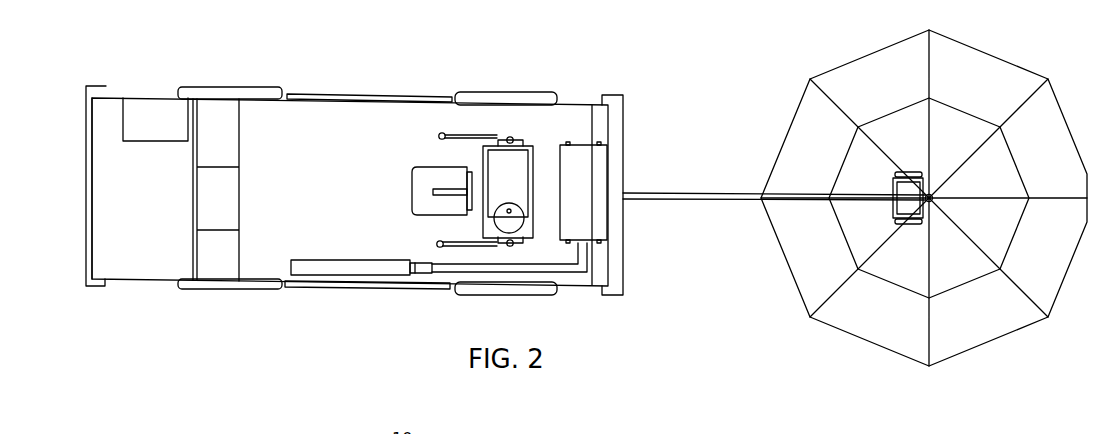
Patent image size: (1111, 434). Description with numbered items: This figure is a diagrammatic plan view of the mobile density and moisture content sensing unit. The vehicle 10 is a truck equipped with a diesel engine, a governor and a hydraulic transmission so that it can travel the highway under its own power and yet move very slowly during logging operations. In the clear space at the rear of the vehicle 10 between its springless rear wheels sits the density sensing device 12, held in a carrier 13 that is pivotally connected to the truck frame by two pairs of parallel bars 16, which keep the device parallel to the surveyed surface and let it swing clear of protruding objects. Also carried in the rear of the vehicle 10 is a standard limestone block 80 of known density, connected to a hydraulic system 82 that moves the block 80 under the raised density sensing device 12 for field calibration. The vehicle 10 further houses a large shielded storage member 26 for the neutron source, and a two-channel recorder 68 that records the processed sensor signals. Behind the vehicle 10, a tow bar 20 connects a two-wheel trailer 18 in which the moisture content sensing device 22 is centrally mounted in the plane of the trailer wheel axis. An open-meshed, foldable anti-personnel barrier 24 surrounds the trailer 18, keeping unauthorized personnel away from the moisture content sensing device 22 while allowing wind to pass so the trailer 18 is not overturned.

The vehicle 10 is at (404, 287).
The density sensing device 12 is at (516, 172).
The carrier 13 is at (515, 190).
The parallel bars 16 is at (487, 249).
The trailer 18 is at (917, 228).
The tow bar 20 is at (690, 192).
The moisture content sensing device 22 is at (893, 187).
The anti-personnel barrier 24 is at (924, 198).
The shielded storage member 26 is at (432, 167).
The two-channel recorder 68 is at (133, 141).
The standard limestone block 80 is at (597, 144).
The hydraulic system 82 is at (392, 262).